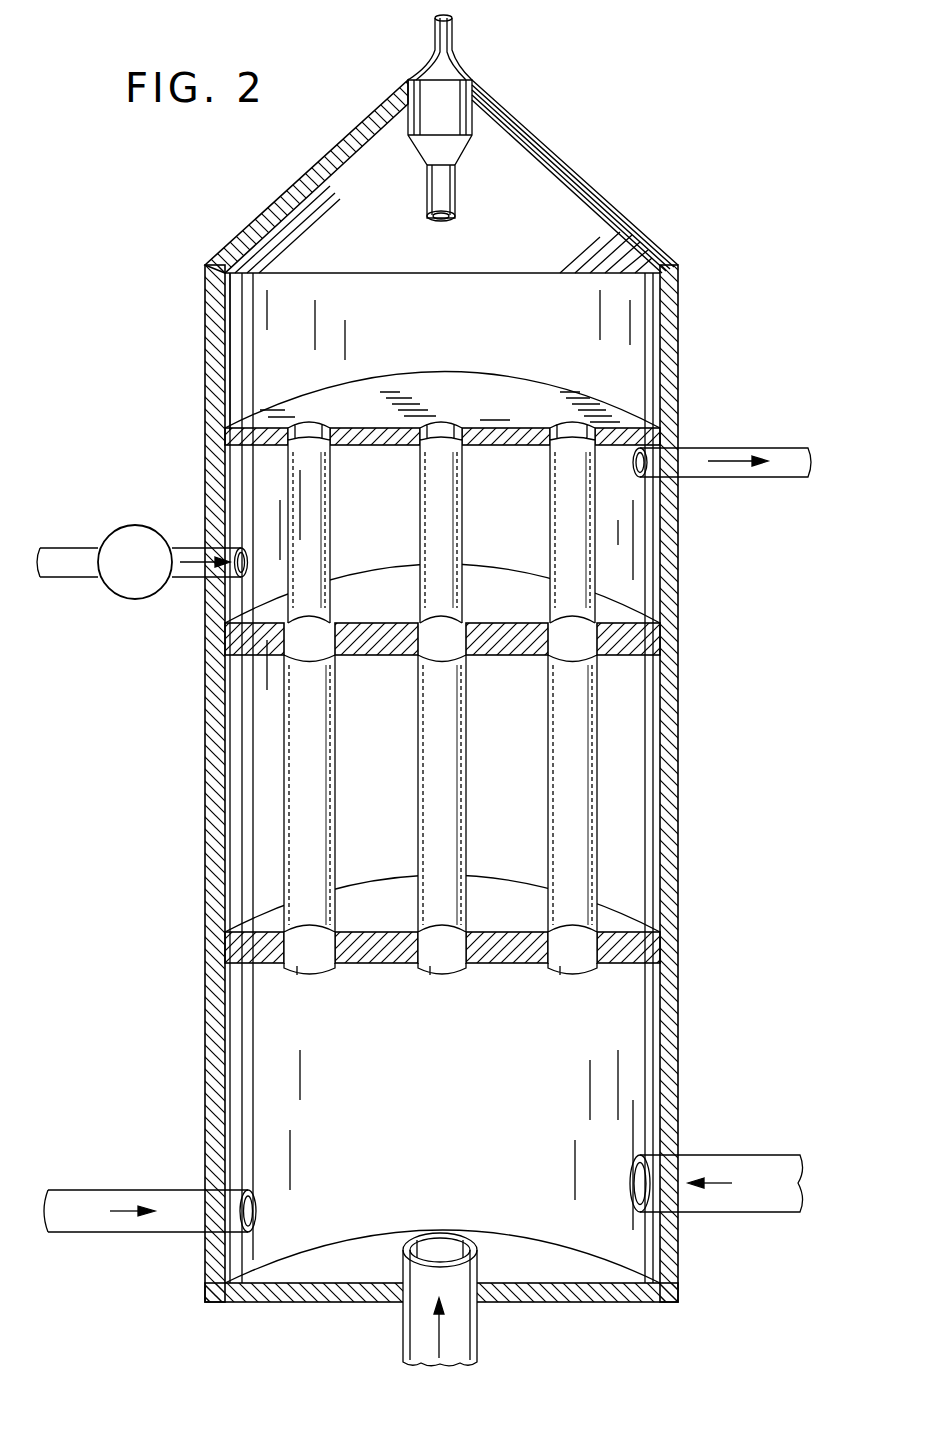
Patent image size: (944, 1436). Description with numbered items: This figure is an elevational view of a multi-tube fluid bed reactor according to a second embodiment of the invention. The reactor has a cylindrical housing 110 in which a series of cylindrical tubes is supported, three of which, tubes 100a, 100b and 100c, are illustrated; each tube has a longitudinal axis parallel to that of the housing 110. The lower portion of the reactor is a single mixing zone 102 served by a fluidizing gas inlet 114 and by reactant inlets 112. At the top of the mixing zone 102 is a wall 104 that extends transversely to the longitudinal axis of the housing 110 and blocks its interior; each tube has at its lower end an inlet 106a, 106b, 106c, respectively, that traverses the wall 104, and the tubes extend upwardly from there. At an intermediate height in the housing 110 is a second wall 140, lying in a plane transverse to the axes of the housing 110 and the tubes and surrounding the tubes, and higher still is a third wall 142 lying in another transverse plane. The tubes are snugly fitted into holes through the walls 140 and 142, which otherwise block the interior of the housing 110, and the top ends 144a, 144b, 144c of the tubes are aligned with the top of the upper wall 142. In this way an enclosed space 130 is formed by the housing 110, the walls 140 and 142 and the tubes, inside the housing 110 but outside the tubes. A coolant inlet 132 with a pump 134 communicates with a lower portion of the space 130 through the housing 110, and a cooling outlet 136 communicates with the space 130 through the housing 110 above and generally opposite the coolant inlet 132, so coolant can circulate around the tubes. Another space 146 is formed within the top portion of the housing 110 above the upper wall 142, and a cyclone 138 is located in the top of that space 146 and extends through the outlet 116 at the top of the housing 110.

The tube 100a is at (337, 752).
The tube 100b is at (467, 804).
The tube 100c is at (598, 750).
The mixing zone 102 is at (456, 1106).
The wall 104 is at (640, 948).
The inlet 106a is at (317, 948).
The inlet 106b is at (443, 948).
The inlet 106c is at (573, 948).
The cylindrical housing 110 is at (210, 857).
The reactant inlets 112 is at (131, 1195).
The fluidizing gas inlet 114 is at (463, 1341).
The outlet 116 is at (438, 41).
The enclosed space 130 is at (625, 518).
The coolant inlet 132 is at (195, 555).
The pump 134 is at (120, 540).
The cooling outlet 136 is at (672, 460).
The cyclone 138 is at (437, 113).
The second wall 140 is at (508, 650).
The third wall 142 is at (500, 392).
The top end 144a is at (311, 430).
The top end 144b is at (440, 428).
The top end 144c is at (572, 428).
The space 146 is at (262, 349).